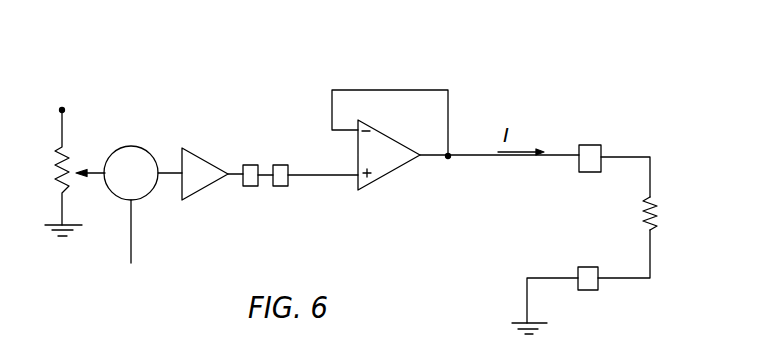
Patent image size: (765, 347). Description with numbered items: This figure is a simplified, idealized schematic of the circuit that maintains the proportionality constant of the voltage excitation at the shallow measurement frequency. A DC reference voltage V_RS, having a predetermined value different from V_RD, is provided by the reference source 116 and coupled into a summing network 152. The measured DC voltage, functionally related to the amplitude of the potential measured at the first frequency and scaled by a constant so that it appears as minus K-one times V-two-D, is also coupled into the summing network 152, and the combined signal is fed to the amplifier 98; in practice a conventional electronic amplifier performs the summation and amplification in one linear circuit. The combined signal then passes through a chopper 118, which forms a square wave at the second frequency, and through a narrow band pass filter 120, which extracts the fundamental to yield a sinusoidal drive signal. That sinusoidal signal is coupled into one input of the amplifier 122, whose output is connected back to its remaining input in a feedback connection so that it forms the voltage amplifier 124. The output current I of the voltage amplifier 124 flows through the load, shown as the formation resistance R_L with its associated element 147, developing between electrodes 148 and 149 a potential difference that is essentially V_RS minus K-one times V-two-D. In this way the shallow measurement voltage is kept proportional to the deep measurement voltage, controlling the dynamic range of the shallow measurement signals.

The reference source 116 is at (98, 108).
The summing network 152 is at (143, 148).
The amplifier 98 is at (203, 160).
The chopper 118 is at (250, 165).
The narrow band pass filter 120 is at (283, 165).
The amplifier 122 is at (392, 139).
The voltage amplifier 124 is at (459, 76).
The electrode 148 is at (593, 145).
The load resistor 147 is at (643, 210).
The electrode 149 is at (590, 290).